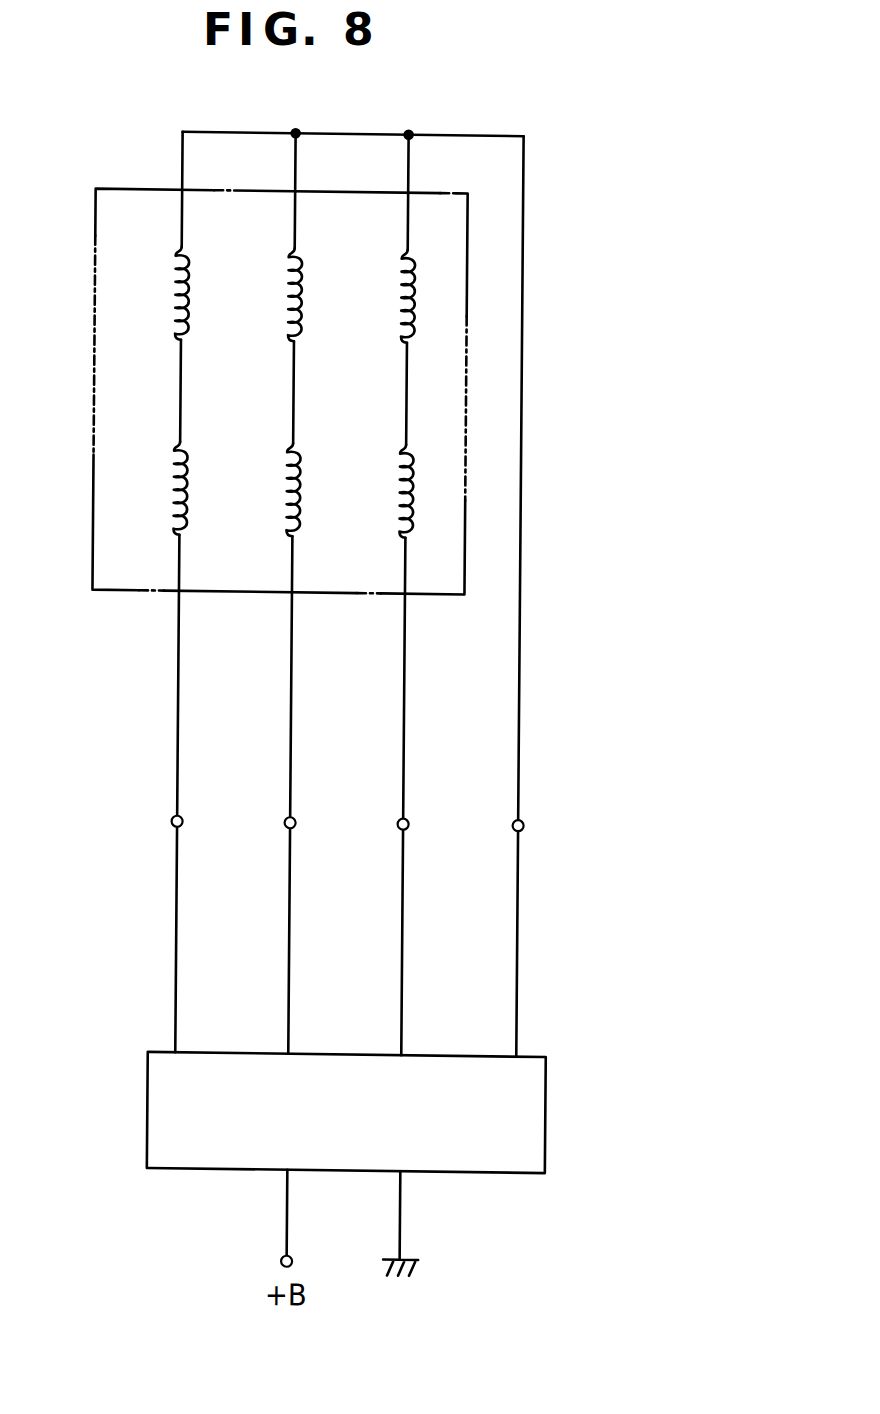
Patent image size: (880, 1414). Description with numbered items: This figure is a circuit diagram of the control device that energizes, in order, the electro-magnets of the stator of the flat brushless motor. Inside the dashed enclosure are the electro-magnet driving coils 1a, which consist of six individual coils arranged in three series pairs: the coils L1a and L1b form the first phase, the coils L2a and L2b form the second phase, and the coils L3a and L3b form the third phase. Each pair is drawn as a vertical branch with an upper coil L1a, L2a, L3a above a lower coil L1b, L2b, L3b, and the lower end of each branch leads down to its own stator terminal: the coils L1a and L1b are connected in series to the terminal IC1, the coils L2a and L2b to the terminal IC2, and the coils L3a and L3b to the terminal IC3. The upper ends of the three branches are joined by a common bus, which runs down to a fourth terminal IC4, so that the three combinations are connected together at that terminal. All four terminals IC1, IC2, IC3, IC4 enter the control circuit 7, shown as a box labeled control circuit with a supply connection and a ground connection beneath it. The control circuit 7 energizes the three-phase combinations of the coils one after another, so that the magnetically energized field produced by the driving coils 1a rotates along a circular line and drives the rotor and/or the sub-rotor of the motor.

The electro-magnet driving coils 1a is at (92, 242).
The individual coil L1a is at (155, 293).
The individual coil L2a is at (260, 294).
The individual coil L3a is at (376, 296).
The individual coil L1b is at (154, 488).
The individual coil L2b is at (259, 489).
The individual coil L3b is at (374, 491).
The terminal IC1 is at (171, 826).
The terminal IC2 is at (286, 825).
The terminal IC3 is at (399, 824).
The terminal IC4 is at (514, 823).
The control circuit 7 is at (151, 1115).